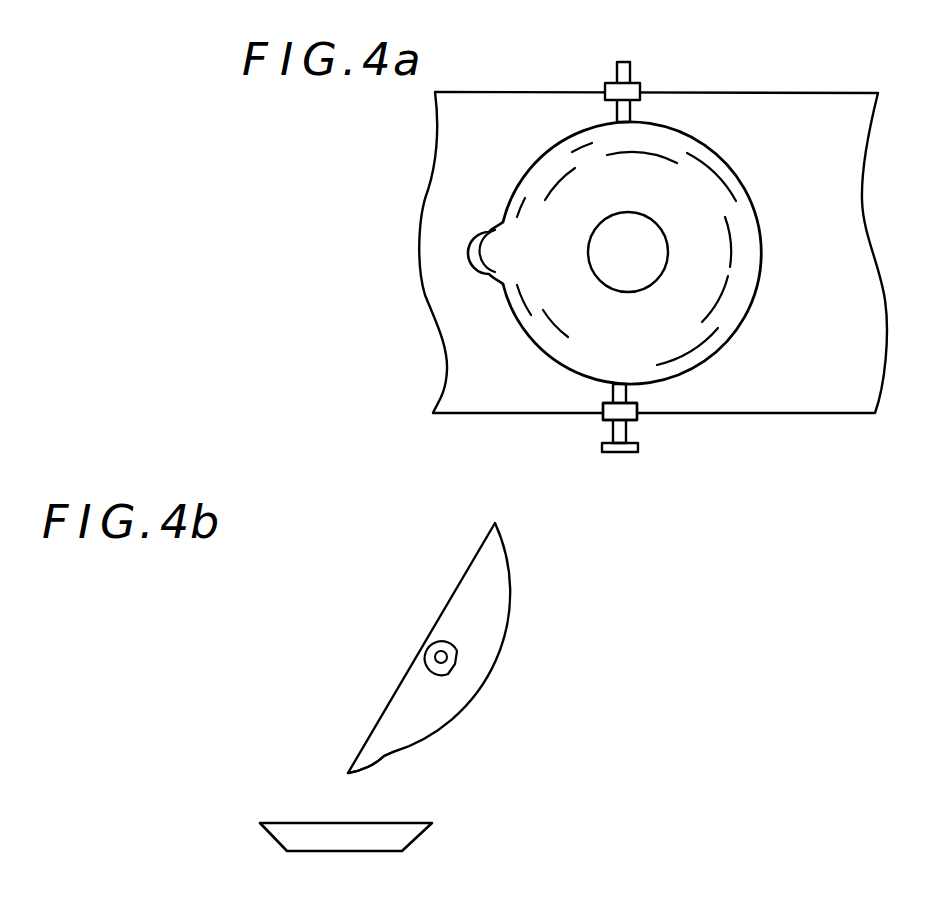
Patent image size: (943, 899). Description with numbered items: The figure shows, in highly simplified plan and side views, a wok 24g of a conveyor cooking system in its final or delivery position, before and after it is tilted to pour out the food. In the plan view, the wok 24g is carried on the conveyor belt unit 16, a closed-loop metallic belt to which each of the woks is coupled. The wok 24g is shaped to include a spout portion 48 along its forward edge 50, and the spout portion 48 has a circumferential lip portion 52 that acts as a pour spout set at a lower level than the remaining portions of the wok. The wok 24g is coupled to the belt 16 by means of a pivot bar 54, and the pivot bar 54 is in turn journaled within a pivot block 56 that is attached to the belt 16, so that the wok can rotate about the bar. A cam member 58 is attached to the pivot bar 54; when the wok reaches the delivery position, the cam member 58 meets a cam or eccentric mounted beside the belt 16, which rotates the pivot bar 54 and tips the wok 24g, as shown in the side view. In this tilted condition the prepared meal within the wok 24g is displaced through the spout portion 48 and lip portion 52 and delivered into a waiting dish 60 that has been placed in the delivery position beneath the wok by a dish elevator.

In FIG. 4a, the conveyor belt unit 16 is at (812, 128).
In FIG. 4a, the spout portion 48 is at (482, 230).
In FIG. 4b, the spout portion 48 is at (353, 760).
In FIG. 4a, the forward edge 50 is at (545, 310).
In FIG. 4a, the circumferential lip portion 52 is at (473, 255).
In FIG. 4b, the circumferential lip portion 52 is at (375, 768).
In FIG. 4a, the pivot bar 54 is at (622, 395).
In FIG. 4a, the pivot block 56 is at (640, 85).
In FIG. 4a, the cam member 58 is at (637, 452).
In FIG. 4b, the cam member 58 is at (448, 662).
In FIG. 4b, the dish 60 is at (287, 832).
In FIG. 4b, the wok 24g is at (173, 592).